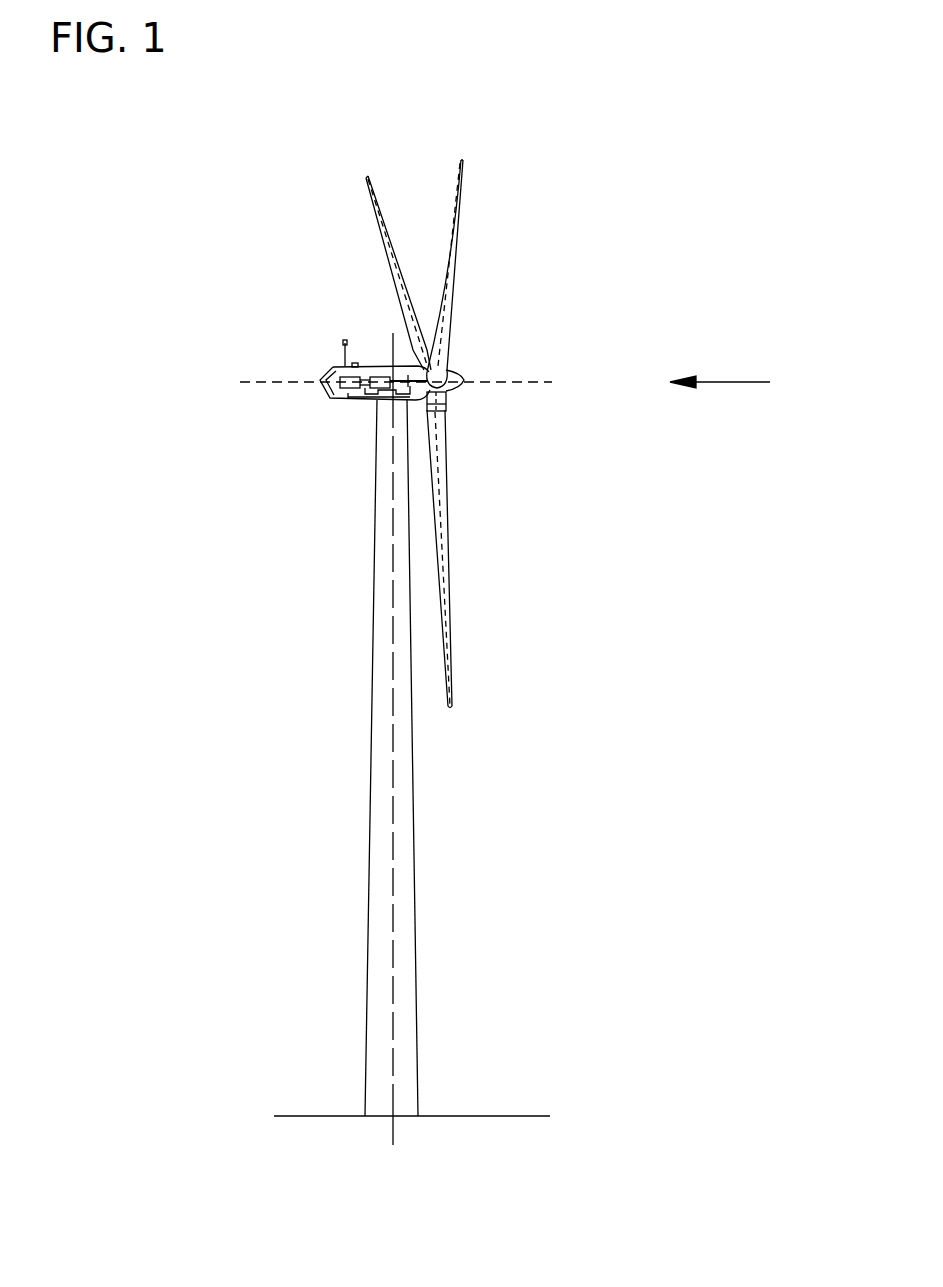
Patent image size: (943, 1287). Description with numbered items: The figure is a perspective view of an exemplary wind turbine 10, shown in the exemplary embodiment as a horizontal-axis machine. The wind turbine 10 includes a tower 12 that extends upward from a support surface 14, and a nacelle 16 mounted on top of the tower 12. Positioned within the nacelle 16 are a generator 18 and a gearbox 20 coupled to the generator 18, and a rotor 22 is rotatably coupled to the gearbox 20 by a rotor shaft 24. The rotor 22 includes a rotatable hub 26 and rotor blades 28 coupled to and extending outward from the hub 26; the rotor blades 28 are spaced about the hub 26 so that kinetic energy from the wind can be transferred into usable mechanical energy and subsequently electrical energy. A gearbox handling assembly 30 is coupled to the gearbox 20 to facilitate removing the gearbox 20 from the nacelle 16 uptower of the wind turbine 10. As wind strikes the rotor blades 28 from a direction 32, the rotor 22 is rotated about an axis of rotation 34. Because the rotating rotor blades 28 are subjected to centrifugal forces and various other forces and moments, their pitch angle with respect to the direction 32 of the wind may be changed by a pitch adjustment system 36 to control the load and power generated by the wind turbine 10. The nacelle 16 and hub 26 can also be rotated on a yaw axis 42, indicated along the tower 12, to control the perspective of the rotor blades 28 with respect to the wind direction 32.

The wind turbine 10 is at (170, 188).
The tower 12 is at (368, 904).
The support surface 14 is at (328, 1115).
The nacelle 16 is at (350, 398).
The generator 18 is at (340, 381).
The gearbox 20 is at (378, 366).
The rotor 22 is at (462, 293).
The rotor shaft 24 is at (406, 362).
The hub 26 is at (450, 375).
The rotor blade 28 is at (464, 203).
The gearbox handling assembly 30 is at (368, 403).
The direction 32 is at (737, 382).
The axis of rotation 34 is at (537, 383).
The pitch adjustment system 36 is at (450, 396).
The yaw axis 42 is at (393, 850).